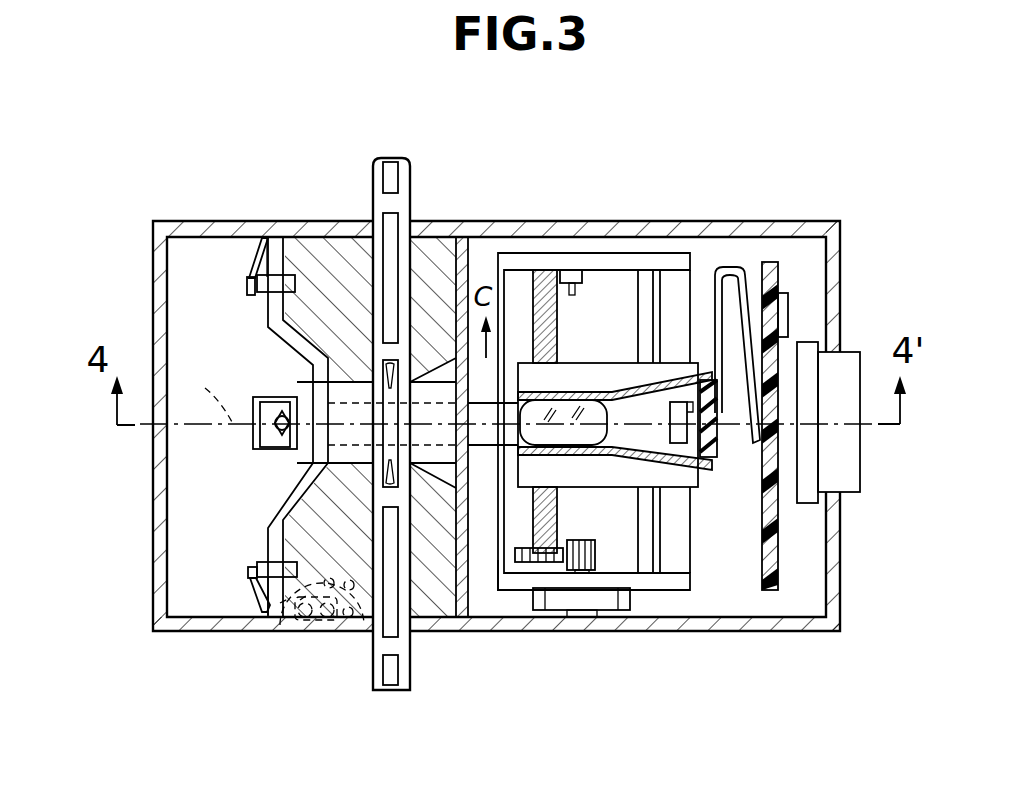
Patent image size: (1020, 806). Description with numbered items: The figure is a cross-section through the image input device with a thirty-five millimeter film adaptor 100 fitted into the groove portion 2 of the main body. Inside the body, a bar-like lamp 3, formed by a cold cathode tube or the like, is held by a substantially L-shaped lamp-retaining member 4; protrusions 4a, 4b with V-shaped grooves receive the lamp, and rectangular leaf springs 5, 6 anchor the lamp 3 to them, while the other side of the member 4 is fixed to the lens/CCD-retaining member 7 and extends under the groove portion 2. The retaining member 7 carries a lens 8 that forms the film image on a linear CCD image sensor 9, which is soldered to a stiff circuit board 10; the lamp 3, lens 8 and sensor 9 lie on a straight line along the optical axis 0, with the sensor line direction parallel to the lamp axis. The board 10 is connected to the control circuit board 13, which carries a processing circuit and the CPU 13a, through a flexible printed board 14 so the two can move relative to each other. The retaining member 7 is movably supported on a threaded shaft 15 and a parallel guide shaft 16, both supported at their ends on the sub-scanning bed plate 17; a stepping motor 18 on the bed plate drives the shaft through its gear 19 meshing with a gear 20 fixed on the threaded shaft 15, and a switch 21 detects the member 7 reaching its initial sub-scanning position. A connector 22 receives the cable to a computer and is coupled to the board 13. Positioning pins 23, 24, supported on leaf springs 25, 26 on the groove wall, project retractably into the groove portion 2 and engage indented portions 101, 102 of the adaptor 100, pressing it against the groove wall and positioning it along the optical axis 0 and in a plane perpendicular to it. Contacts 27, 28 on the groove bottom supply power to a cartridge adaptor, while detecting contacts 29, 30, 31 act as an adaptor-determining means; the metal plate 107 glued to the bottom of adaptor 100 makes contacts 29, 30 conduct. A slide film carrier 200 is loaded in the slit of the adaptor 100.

The optical axis 0 is at (208, 393).
The groove portion 2 is at (300, 247).
The bar-like lamp 3 is at (279, 433).
The lamp-retaining member 4 is at (302, 447).
The protrusion 4a is at (170, 467).
The protrusion 4b is at (264, 432).
The leaf spring 5 is at (186, 378).
The leaf spring 6 is at (252, 396).
The lens/CCD-retaining member 7 is at (690, 495).
The lens 8 is at (517, 420).
The linear CCD image sensor 9 is at (673, 400).
The circuit board 10 is at (716, 408).
The control circuit board 13 is at (770, 262).
The CPU 13a is at (789, 306).
The flexible printed board 14 is at (727, 267).
The threaded shaft 15 is at (556, 335).
The guide shaft 16 is at (645, 330).
The sub-scanning bed plate 17 is at (653, 575).
The stepping motor 18 is at (613, 600).
The gear 19 is at (613, 487).
The gear 20 is at (497, 560).
The switch 21 is at (593, 266).
The connector 22 is at (850, 352).
The positioning pin 23 is at (252, 293).
The positioning pin 24 is at (256, 548).
The leaf spring 25 is at (254, 274).
The leaf spring 26 is at (262, 577).
The contact 27 is at (290, 598).
The contact 28 is at (348, 590).
The detecting contact 29 is at (317, 622).
The detecting contact 30 is at (322, 620).
The detecting contact 31 is at (340, 612).
The 35 mm film adaptor 100 is at (333, 238).
The indented portion 101 is at (207, 374).
The indented portion 102 is at (266, 528).
The metal plate 107 is at (307, 595).
The slide film carrier 200 is at (410, 188).